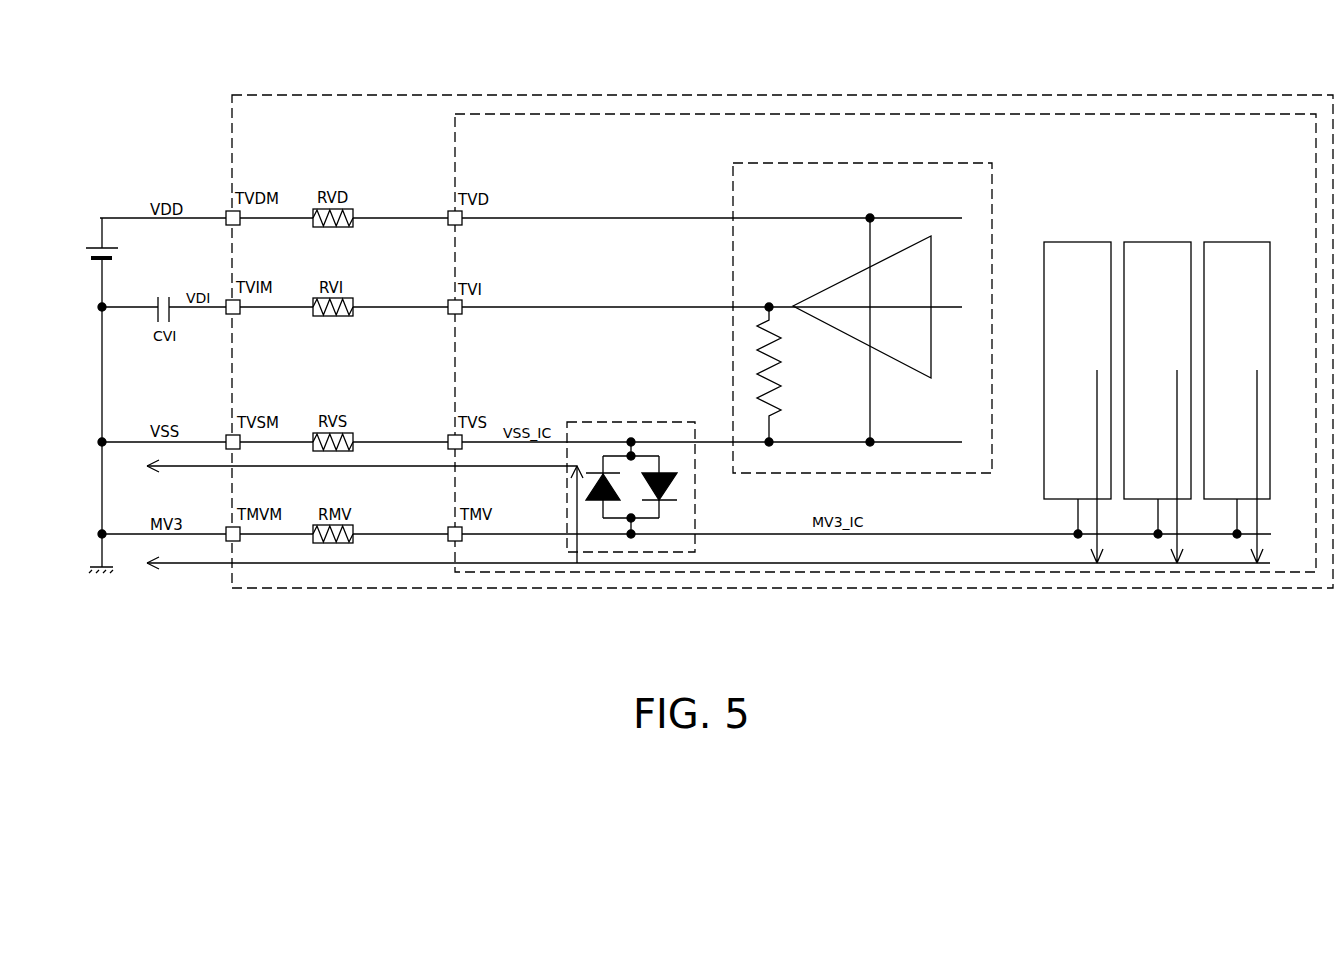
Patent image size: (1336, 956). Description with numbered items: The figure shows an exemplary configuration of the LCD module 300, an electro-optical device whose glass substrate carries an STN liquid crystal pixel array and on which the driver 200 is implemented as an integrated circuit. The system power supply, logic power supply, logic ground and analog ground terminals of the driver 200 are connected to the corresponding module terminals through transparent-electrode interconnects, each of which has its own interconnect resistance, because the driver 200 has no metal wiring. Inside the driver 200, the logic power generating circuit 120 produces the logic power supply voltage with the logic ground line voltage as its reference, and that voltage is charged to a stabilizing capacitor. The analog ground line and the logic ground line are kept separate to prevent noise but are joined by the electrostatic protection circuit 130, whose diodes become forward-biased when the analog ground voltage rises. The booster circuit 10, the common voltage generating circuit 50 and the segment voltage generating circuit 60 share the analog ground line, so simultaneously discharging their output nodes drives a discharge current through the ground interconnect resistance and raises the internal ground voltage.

The LCD module 300 is at (303, 95).
The driver 200 is at (499, 113).
The logic power generating circuit 120 is at (861, 163).
The electrostatic protection circuit 130 is at (629, 422).
The booster circuit 10 is at (1076, 242).
The common voltage generating circuit 50 is at (1155, 242).
The segment voltage generating circuit 60 is at (1236, 242).